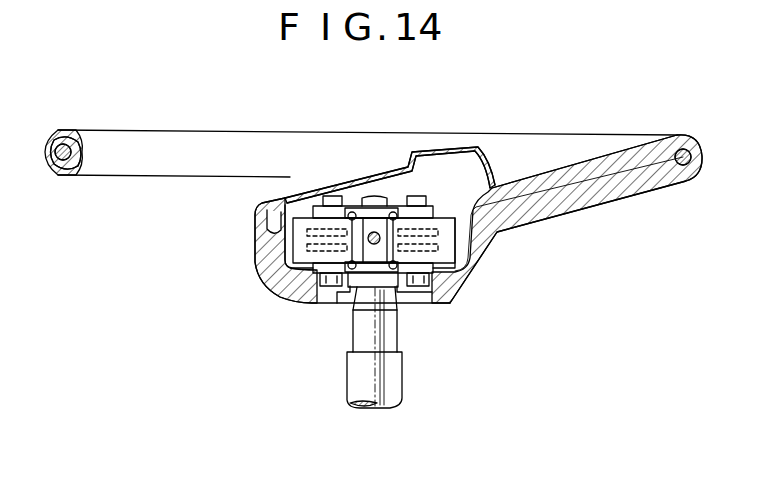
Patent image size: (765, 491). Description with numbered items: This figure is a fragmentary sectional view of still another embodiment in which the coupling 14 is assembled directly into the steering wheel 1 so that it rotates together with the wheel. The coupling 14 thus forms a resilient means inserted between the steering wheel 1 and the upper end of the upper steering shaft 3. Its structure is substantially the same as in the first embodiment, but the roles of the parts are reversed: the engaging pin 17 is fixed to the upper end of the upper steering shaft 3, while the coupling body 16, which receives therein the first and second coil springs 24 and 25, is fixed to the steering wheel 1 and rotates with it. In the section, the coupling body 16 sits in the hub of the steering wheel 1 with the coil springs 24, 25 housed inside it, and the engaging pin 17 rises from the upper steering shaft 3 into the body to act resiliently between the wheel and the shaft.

The steering wheel 1 is at (547, 221).
The upper steering shaft 3 is at (403, 377).
The coupling 14 is at (450, 182).
The coupling body 16 is at (477, 272).
The engaging pin 17 is at (376, 203).
The first coil spring 24 is at (313, 256).
The second coil spring 25 is at (426, 256).